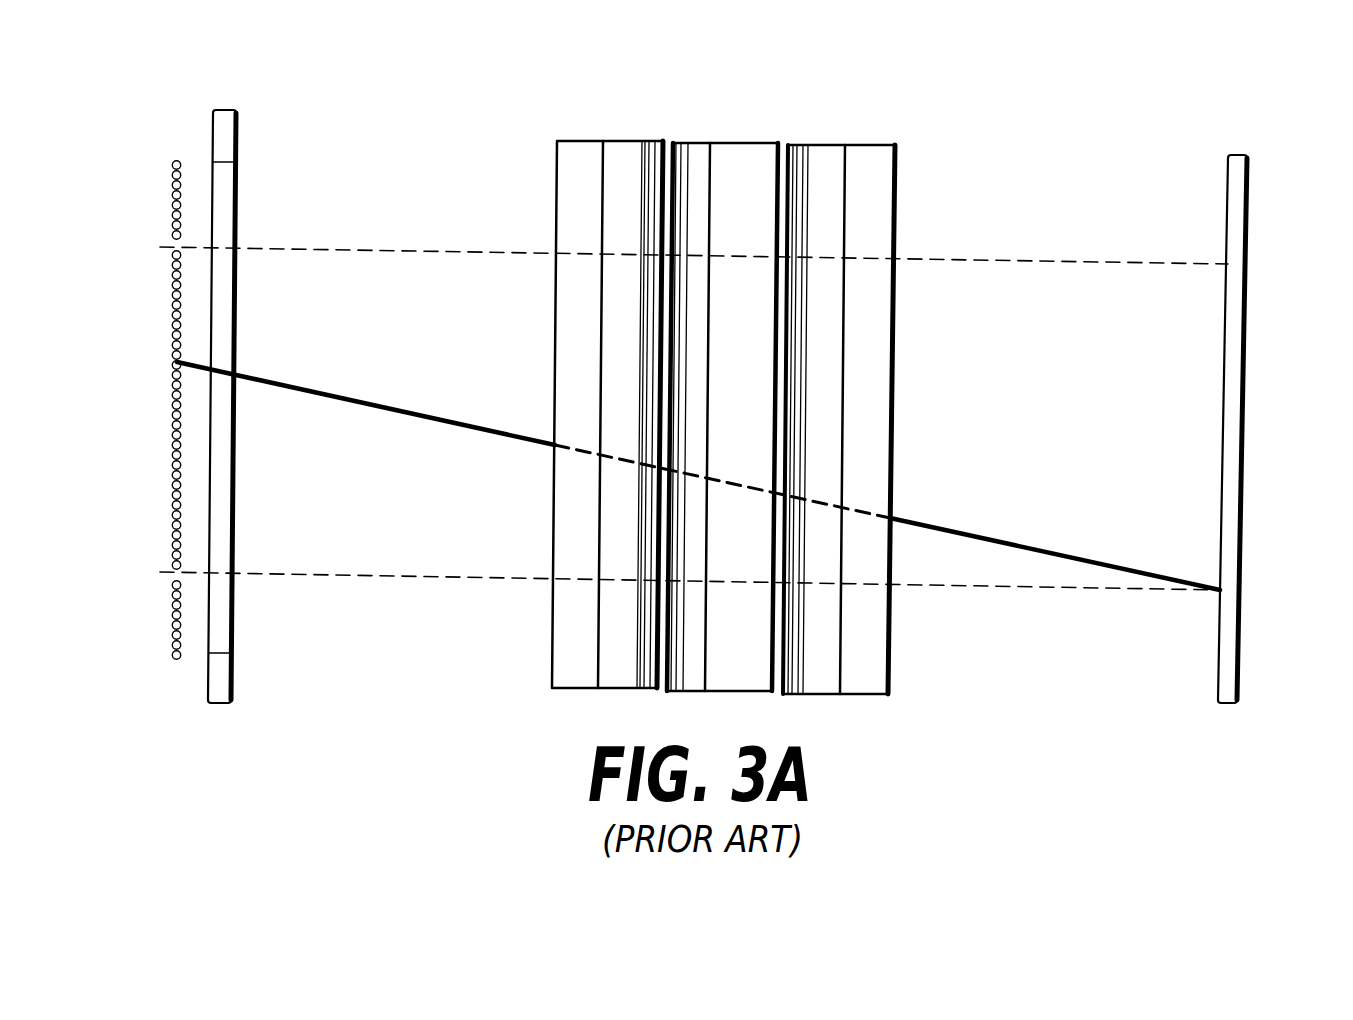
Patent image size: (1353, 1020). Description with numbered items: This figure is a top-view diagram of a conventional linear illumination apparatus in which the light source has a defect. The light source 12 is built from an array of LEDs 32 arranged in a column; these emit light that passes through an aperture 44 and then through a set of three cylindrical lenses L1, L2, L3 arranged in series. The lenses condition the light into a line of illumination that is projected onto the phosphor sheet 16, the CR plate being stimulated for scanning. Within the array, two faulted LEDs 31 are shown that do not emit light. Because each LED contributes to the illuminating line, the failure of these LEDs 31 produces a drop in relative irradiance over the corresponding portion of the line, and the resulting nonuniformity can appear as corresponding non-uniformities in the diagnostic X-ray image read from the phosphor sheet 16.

The light source 12 is at (172, 156).
The LEDs 32 is at (171, 195).
The faulted LEDs 31 is at (160, 247).
The aperture 44 is at (233, 648).
The cylindrical lens L1 is at (627, 141).
The cylindrical lens L2 is at (727, 143).
The cylindrical lens L3 is at (820, 145).
The phosphor sheet 16 is at (1243, 383).